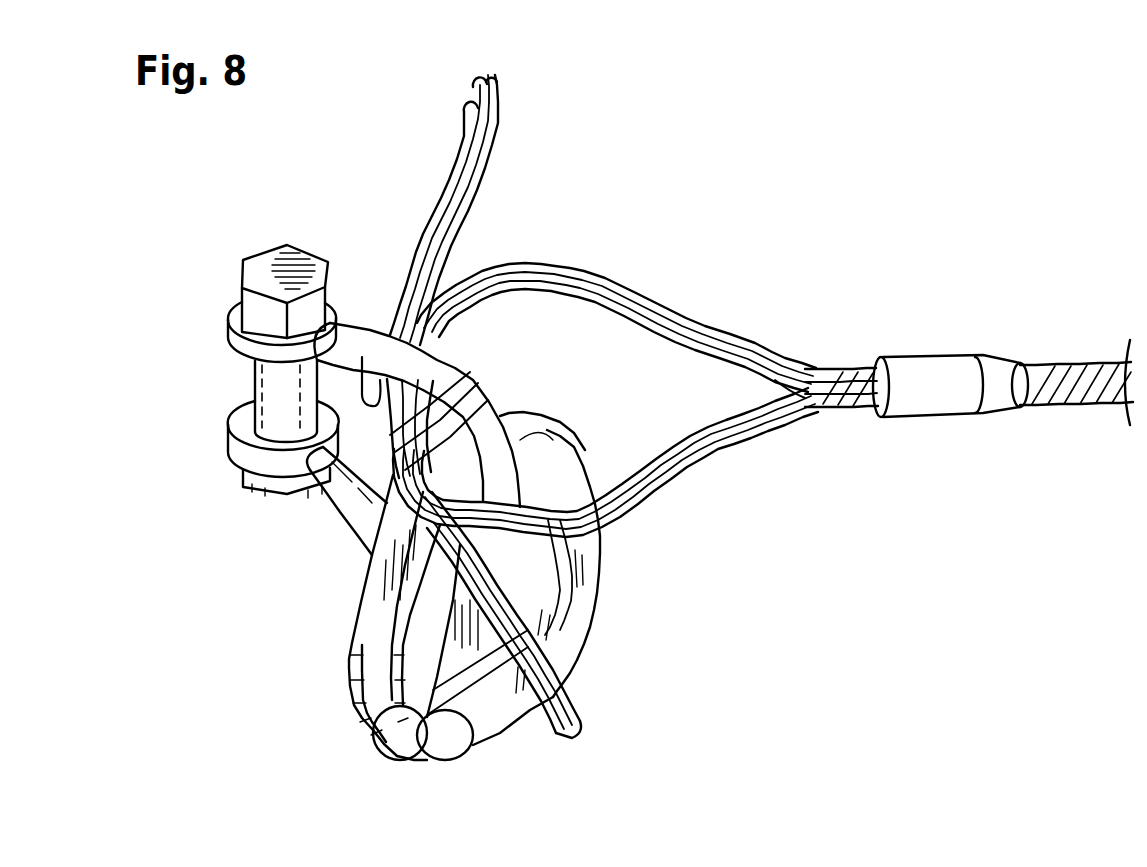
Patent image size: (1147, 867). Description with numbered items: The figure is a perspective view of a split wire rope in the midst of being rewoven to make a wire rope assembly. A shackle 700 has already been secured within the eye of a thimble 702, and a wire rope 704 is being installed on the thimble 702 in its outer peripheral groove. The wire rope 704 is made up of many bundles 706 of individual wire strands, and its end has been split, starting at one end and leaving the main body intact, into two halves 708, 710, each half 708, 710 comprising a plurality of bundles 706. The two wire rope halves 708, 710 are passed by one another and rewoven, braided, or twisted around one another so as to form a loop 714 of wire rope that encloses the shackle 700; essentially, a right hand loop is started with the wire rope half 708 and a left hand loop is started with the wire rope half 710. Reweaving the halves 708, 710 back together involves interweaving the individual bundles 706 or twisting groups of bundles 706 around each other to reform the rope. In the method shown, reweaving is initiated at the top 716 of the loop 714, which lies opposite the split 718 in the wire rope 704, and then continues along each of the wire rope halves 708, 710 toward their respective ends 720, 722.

The shackle 700 is at (459, 391).
The thimble 702 is at (577, 626).
The wire rope 704 is at (857, 368).
The bundles 706 is at (753, 443).
The wire rope half 708 is at (494, 122).
The wire rope half 710 is at (551, 718).
The loop 714 is at (342, 400).
The top of the loop 716 is at (366, 396).
The split 718 is at (781, 393).
The end of wire rope half 720 is at (477, 76).
The end of wire rope half 722 is at (578, 740).